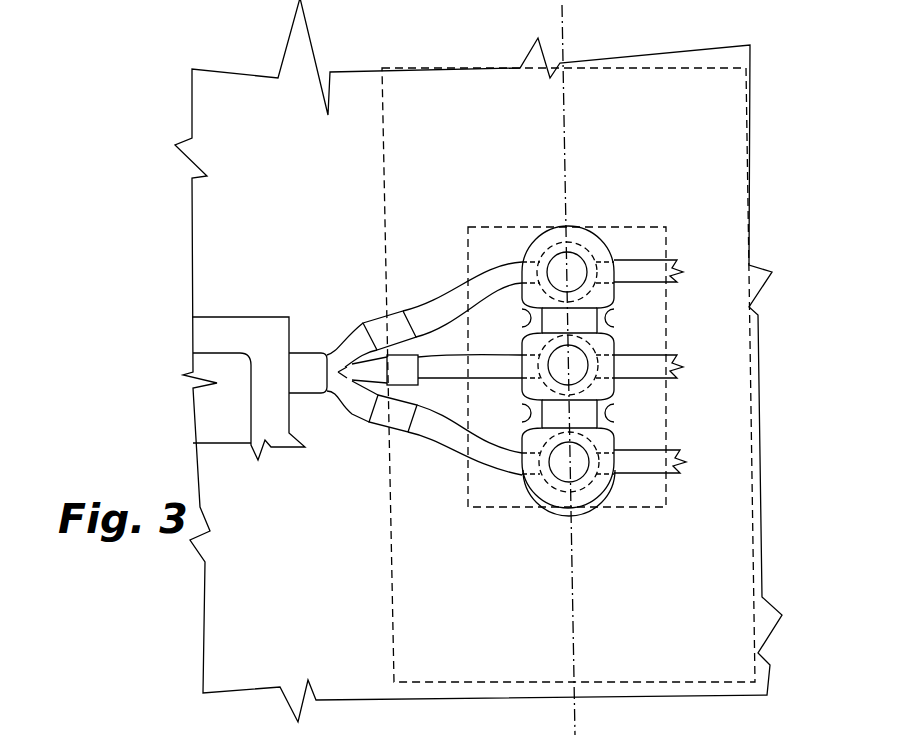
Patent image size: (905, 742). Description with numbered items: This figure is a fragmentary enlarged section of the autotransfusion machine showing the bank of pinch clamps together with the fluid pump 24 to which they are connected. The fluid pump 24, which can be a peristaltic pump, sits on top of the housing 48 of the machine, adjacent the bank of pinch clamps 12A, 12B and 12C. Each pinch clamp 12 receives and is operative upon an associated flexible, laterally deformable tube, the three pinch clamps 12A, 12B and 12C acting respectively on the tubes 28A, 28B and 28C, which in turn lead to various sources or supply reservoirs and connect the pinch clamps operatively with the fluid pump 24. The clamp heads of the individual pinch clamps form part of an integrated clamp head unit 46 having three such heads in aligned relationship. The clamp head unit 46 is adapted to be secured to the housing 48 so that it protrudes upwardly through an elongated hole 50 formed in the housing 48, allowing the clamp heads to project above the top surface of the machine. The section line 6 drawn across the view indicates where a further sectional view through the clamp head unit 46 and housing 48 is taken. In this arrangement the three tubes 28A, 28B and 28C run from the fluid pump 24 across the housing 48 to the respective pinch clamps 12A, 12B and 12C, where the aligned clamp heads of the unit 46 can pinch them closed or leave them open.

The section line 6- 6 is at (540, 21).
The pinch clamp 12 is at (606, 345).
The pinch clamp 12A is at (613, 452).
The pinch clamp 12B is at (613, 352).
The pinch clamp 12C is at (617, 223).
The fluid pump 24 is at (273, 317).
The flexible tube 28A is at (655, 466).
The flexible tube 28B is at (672, 370).
The flexible tube 28C is at (650, 270).
The clamp head unit 46 is at (605, 505).
The housing 48 is at (223, 633).
The elongated hole 50 is at (537, 248).